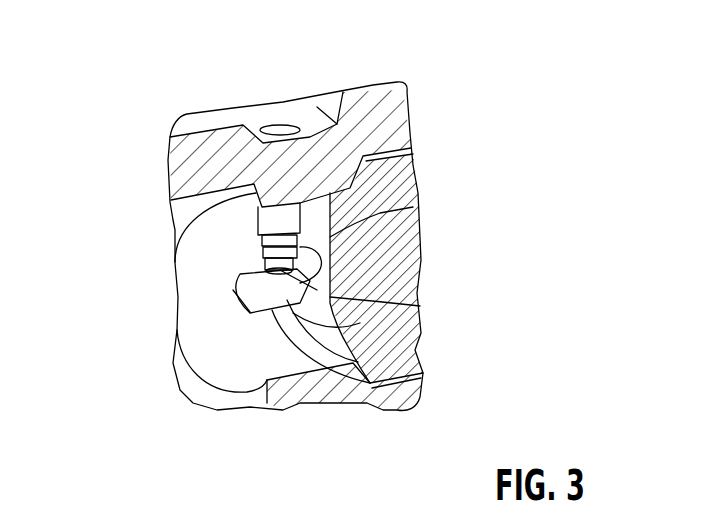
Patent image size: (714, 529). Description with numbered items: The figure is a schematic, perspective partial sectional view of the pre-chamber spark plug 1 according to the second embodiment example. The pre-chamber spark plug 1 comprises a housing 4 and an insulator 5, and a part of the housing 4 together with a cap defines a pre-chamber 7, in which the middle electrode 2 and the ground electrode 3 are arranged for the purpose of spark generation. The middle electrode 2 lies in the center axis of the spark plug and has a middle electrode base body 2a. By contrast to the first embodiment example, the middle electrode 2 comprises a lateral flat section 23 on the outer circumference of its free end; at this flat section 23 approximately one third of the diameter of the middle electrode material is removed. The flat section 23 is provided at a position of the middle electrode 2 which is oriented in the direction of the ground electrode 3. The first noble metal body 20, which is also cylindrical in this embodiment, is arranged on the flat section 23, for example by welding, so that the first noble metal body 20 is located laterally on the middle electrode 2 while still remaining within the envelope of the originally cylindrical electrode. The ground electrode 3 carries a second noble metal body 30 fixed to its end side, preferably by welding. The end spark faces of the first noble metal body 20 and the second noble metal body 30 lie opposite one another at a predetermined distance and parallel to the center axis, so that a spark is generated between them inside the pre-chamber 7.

The pre-chamber spark plug 1 is at (137, 145).
The middle electrode 2 is at (292, 299).
The middle electrode base body 2a is at (241, 293).
The ground electrode 3 is at (284, 218).
The housing 4 is at (372, 133).
The insulator 5 is at (400, 260).
The pre-chamber 7 is at (247, 363).
The first noble metal body 20 is at (295, 291).
The flat section 23 is at (256, 272).
The second noble metal body 30 is at (392, 212).